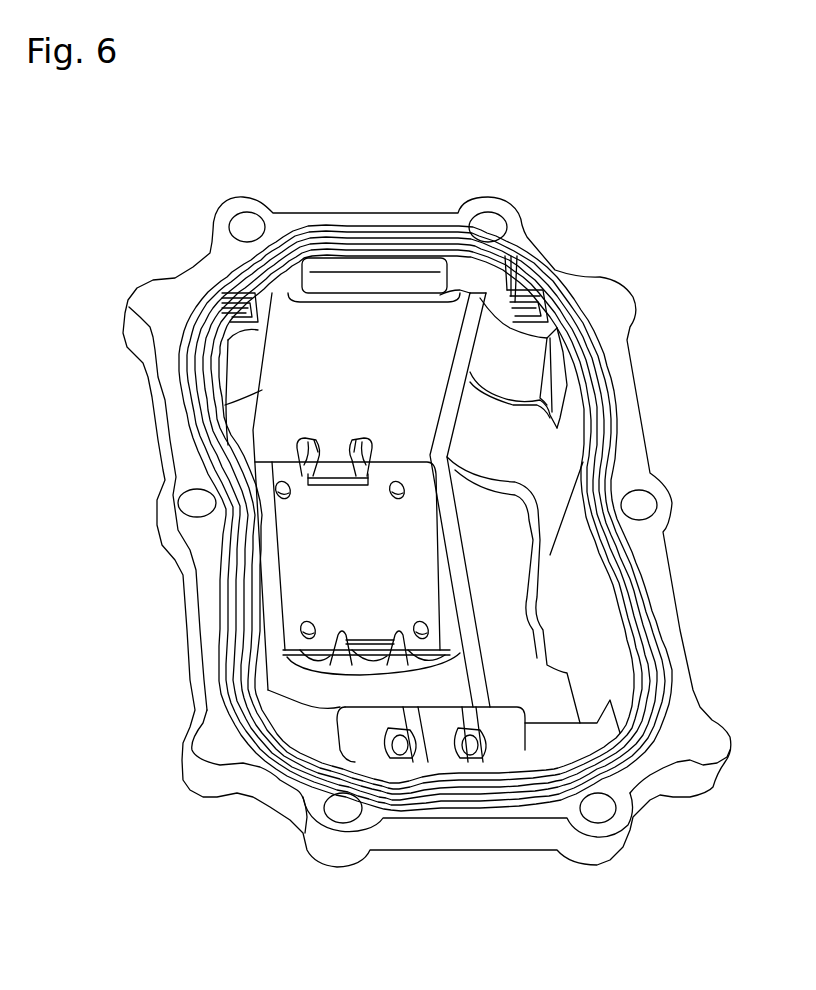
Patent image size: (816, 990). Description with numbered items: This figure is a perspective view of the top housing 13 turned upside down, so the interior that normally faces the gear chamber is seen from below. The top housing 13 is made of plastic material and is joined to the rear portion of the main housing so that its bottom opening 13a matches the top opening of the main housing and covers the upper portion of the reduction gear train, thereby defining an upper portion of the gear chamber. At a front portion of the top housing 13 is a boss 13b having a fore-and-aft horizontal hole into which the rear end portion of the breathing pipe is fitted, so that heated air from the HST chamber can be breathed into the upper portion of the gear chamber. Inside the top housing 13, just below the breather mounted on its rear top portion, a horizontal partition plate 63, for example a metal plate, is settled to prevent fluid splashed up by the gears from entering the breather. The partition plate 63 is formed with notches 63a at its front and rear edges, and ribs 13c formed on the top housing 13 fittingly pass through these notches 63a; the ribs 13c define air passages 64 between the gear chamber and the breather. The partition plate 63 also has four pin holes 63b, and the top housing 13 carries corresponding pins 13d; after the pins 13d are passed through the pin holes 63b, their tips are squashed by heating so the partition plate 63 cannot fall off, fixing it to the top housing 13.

The top housing 13 is at (558, 262).
The bottom opening 13a is at (628, 633).
The boss 13b is at (483, 705).
The ribs 13c is at (319, 452).
The pins 13d is at (285, 478).
The partition plate 63 is at (360, 580).
The notches 63a is at (333, 493).
The pin holes 63b is at (284, 502).
The air passages 64 is at (352, 445).